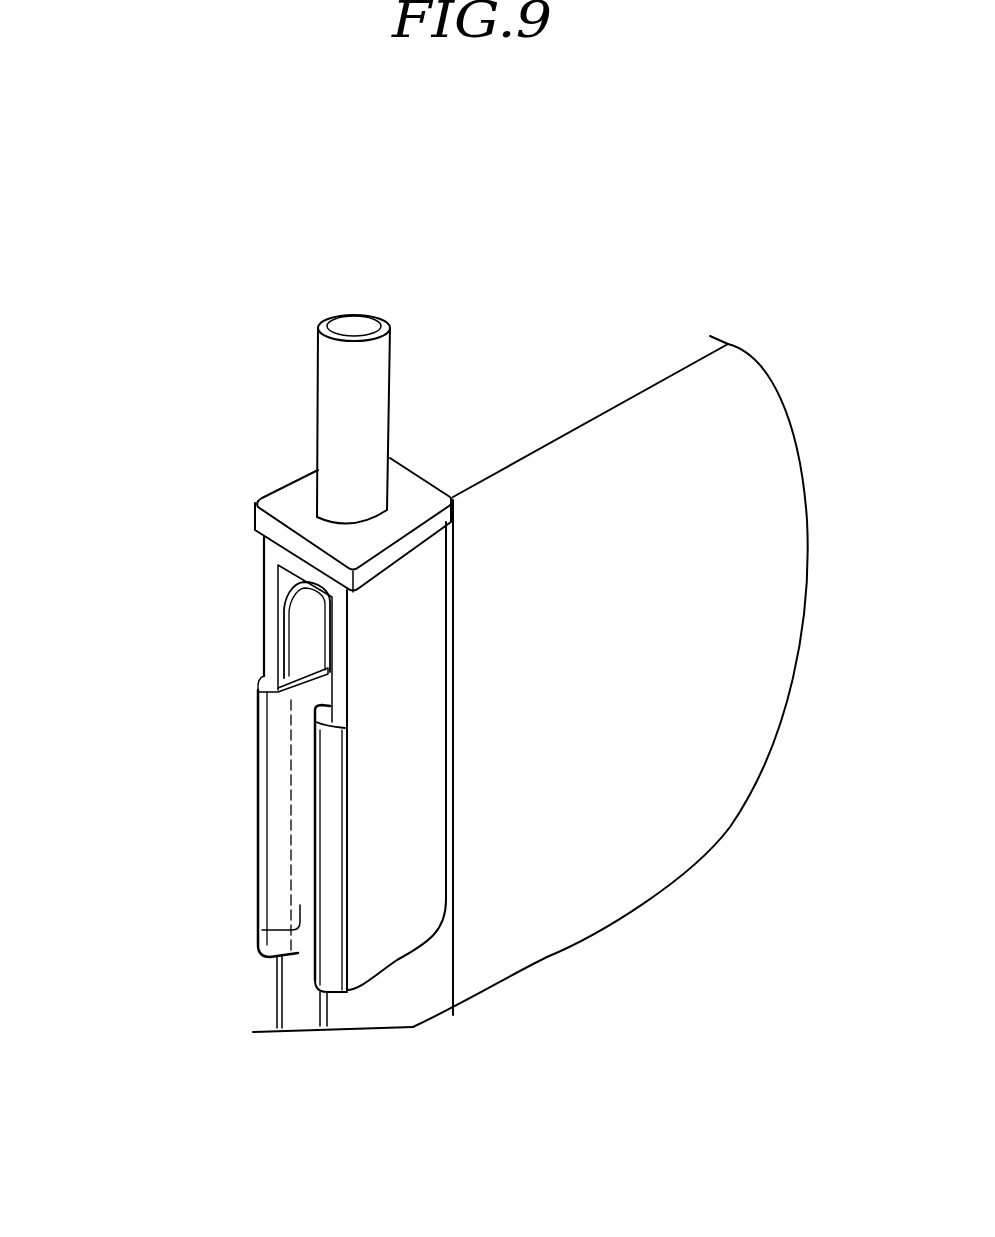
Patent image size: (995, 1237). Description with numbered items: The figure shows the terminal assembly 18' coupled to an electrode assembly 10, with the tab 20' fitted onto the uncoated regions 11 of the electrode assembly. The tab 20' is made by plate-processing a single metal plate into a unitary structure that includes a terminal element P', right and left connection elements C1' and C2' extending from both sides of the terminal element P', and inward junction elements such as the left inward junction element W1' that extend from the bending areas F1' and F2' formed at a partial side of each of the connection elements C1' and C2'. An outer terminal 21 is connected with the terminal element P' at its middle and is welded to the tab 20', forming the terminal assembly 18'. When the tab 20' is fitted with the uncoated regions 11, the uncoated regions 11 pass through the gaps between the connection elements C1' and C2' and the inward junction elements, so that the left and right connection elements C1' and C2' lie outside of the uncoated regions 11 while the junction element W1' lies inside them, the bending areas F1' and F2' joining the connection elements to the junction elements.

The cabinet 10 is at (700, 758).
The uncoated regions 11 is at (298, 1010).
The terminal assembly 18' is at (463, 657).
The tab 20' is at (227, 769).
The outer terminal 21 is at (323, 380).
The terminal element P' is at (315, 525).
The left connection element C1' is at (237, 643).
The right connection element C2' is at (609, 756).
The bending area F1' is at (203, 823).
The bending area F2' is at (252, 848).
The left inward junction element W1' is at (221, 953).